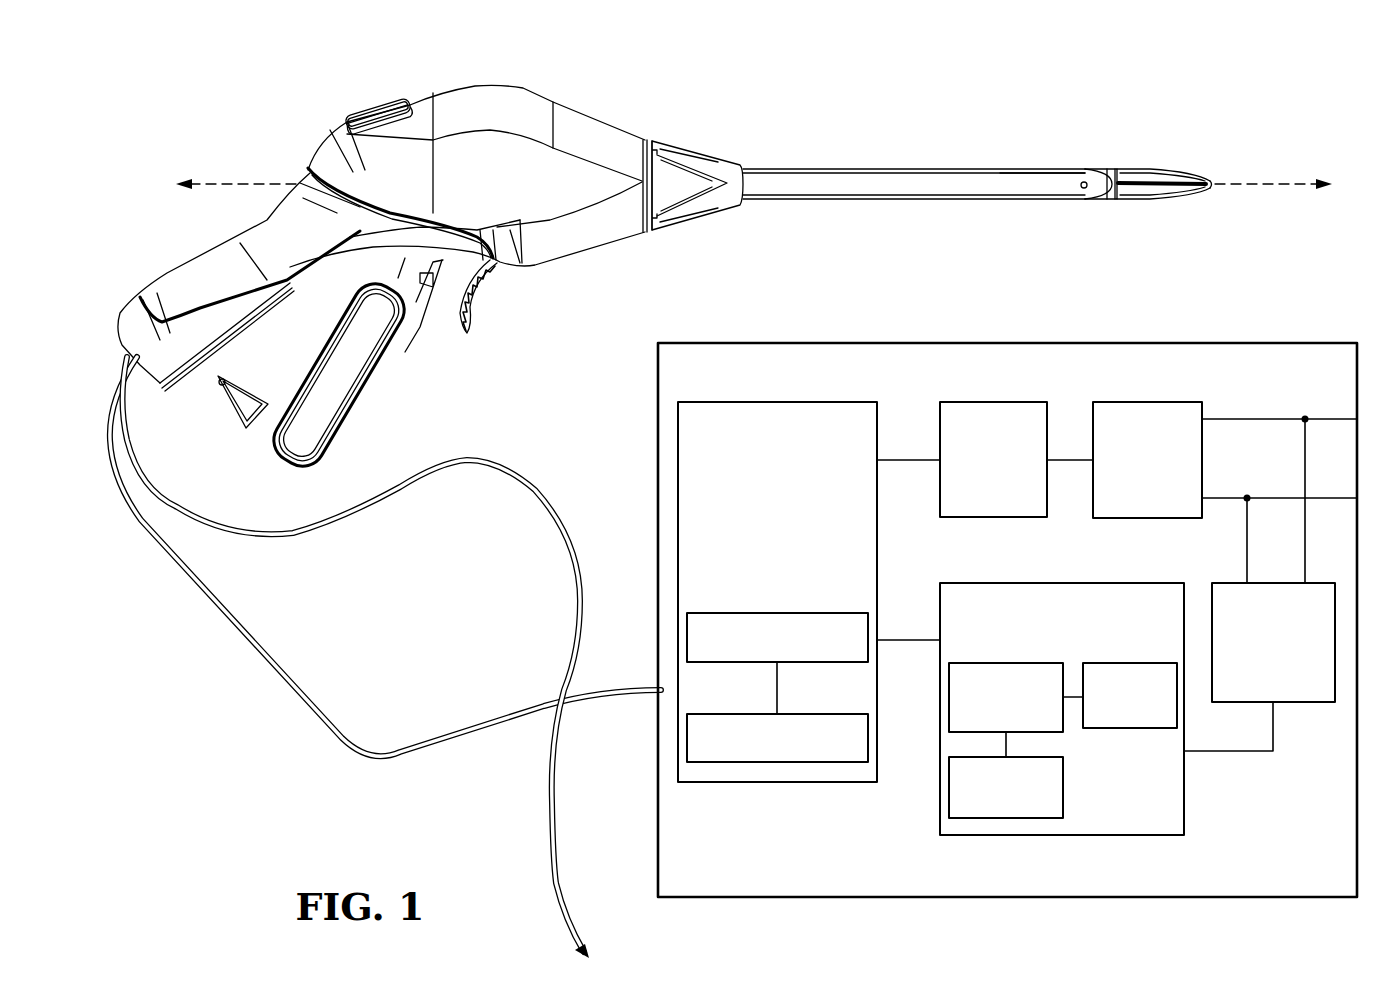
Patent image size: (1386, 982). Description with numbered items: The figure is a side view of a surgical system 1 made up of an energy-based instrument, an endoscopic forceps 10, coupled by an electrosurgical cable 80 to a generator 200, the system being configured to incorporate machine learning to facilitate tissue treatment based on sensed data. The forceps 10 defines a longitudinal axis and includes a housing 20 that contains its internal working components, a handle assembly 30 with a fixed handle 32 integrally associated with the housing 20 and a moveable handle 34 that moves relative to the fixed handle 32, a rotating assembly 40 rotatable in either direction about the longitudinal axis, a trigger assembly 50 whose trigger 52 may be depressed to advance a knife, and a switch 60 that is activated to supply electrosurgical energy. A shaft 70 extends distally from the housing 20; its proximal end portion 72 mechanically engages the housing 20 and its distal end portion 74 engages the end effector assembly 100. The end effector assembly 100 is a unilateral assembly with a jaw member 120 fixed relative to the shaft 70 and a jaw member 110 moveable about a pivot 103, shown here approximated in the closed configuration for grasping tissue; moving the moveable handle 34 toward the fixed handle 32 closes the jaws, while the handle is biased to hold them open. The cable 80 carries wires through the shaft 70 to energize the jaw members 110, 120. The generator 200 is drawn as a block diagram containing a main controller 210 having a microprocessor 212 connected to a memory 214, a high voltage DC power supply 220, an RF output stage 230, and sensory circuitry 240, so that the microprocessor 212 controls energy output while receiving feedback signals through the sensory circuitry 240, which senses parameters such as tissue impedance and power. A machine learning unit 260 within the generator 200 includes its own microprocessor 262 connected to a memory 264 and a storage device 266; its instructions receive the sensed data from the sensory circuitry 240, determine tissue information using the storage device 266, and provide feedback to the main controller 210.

The surgical system 1 is at (658, 97).
The endoscopic forceps 10 is at (925, 103).
The housing 20 is at (506, 97).
The handle assembly 30 is at (406, 388).
The fixed handle 32 is at (180, 374).
The moveable handle 34 is at (315, 467).
The rotating assembly 40 is at (696, 152).
The trigger assembly 50 is at (507, 328).
The trigger 52 is at (480, 297).
The switch 60 is at (366, 112).
The shaft 70 is at (935, 162).
The proximal end portion 72 is at (762, 192).
The distal end portion 74 is at (1048, 184).
The electrosurgical cable 80 is at (131, 514).
The end effector assembly 100 is at (1217, 154).
The pivot 103 is at (1083, 190).
The jaw member 110 is at (1146, 170).
The jaw member 120 is at (1160, 200).
The generator 200 is at (1330, 342).
The main controller 210 is at (850, 402).
The microprocessor 212 is at (786, 613).
The memory 214 is at (795, 714).
The high voltage DC power supply (HVPS) 220 is at (1010, 402).
The RF output stage 230 is at (1180, 402).
The sensory circuitry 240 is at (1315, 702).
The machine learning unit 260 is at (1093, 835).
The microprocessor 262 is at (1058, 733).
The memory 264 is at (1130, 729).
The storage device 266 is at (1066, 790).